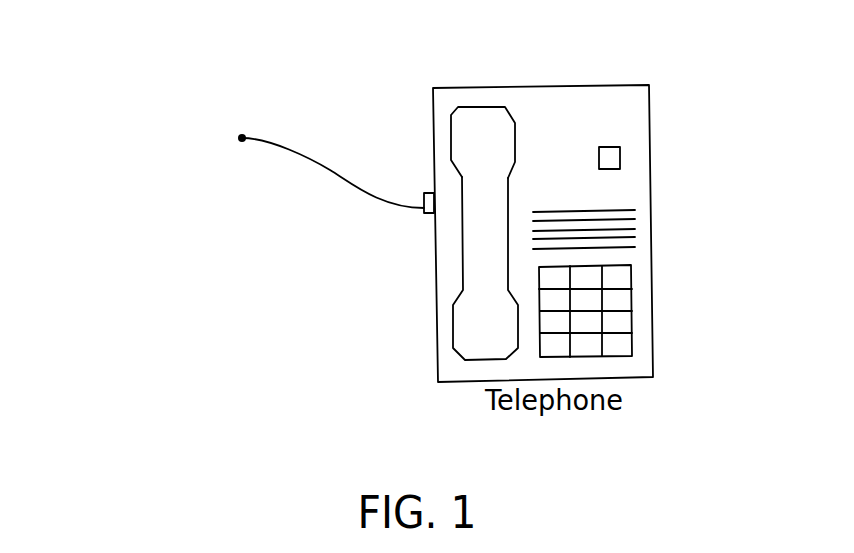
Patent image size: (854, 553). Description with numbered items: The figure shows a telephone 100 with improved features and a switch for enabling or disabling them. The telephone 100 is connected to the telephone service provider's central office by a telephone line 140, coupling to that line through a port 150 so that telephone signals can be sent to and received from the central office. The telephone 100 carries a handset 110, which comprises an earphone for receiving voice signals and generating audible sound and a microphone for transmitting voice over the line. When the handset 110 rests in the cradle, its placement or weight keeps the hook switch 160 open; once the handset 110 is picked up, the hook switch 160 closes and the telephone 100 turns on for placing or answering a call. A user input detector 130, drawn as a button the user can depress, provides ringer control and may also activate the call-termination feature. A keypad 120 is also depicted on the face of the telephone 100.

The telephone 100 is at (650, 127).
The handset 110 is at (472, 223).
The keypad 120 is at (616, 299).
The user input detector 130 is at (611, 147).
The telephone line 140 is at (332, 172).
The port 150 is at (424, 212).
The hook switch 160 is at (478, 122).